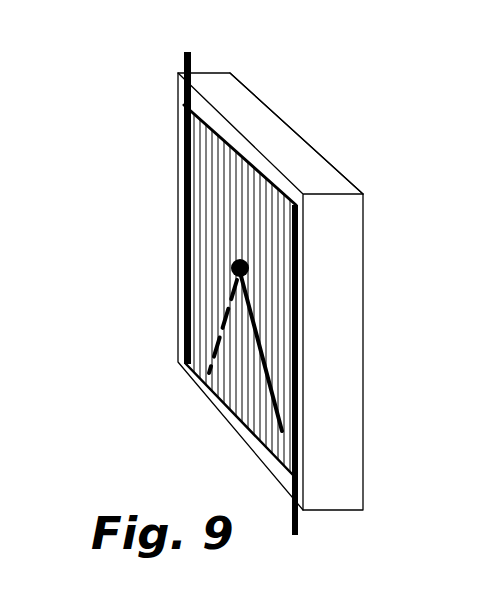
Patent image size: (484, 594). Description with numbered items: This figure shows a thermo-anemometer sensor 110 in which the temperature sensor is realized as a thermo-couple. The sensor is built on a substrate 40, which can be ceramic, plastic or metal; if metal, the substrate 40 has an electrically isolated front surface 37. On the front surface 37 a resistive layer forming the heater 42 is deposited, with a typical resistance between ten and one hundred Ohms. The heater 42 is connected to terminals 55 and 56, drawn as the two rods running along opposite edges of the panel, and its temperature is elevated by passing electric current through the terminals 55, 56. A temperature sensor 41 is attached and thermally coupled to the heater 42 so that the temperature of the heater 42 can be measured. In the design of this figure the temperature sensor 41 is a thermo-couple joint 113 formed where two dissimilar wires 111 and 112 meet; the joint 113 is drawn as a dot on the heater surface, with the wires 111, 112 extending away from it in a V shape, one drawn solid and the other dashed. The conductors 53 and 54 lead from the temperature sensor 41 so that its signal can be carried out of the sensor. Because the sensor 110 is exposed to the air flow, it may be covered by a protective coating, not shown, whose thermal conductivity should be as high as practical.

The filter assembly 110 is at (122, 97).
The substrate 40 is at (290, 157).
The front surface 37 is at (258, 156).
The temperature sensor 41 is at (177, 203).
The heater 42 is at (242, 158).
The terminal 55 is at (185, 58).
The terminal 56 is at (297, 512).
The conductor 53 is at (219, 345).
The conductor 54 is at (282, 432).
The dissimilar wire 111 is at (236, 297).
The dissimilar wire 112 is at (253, 340).
The thermo-couple joint 113 is at (231, 268).